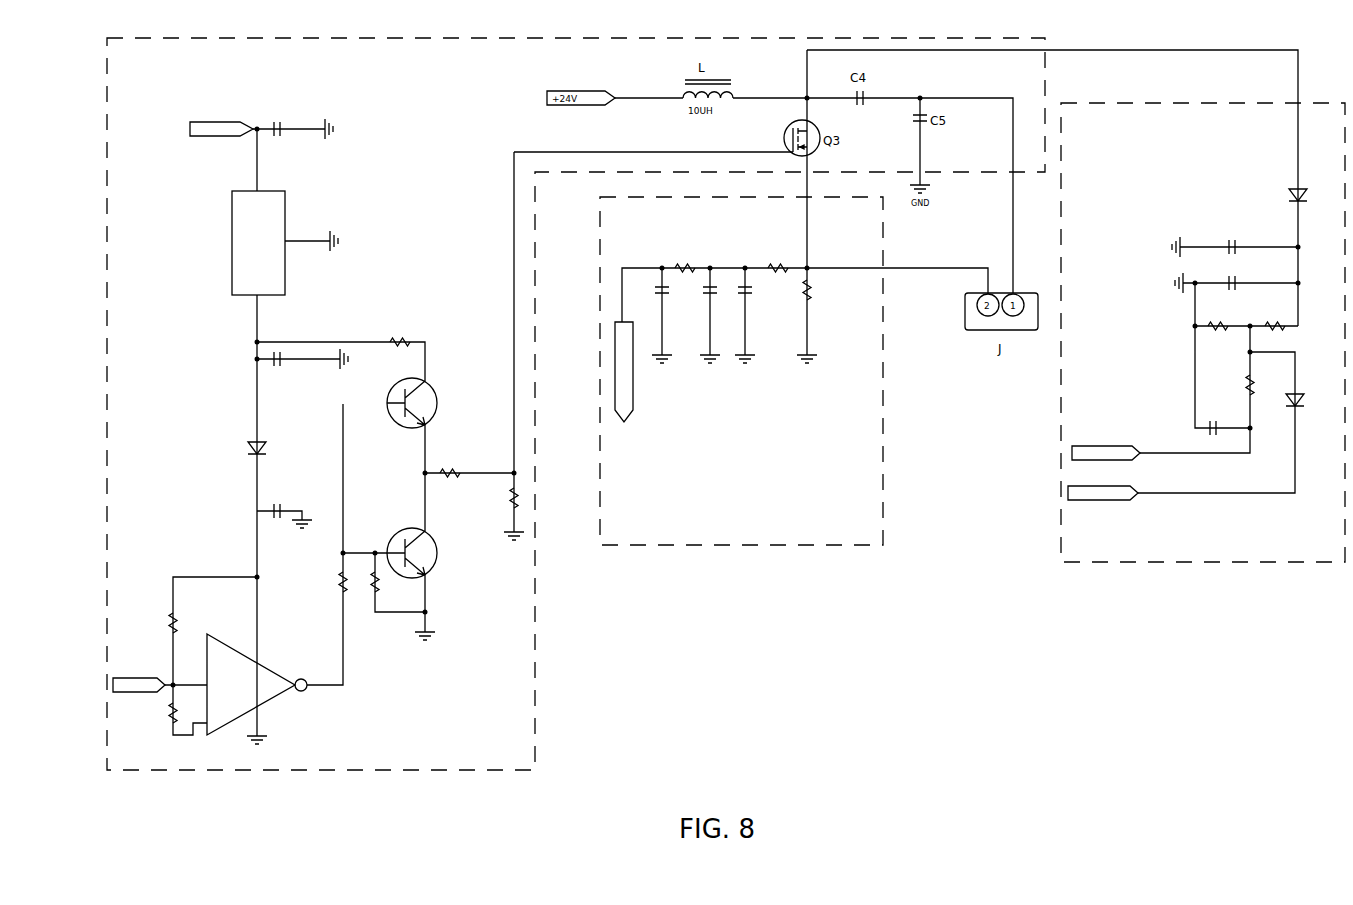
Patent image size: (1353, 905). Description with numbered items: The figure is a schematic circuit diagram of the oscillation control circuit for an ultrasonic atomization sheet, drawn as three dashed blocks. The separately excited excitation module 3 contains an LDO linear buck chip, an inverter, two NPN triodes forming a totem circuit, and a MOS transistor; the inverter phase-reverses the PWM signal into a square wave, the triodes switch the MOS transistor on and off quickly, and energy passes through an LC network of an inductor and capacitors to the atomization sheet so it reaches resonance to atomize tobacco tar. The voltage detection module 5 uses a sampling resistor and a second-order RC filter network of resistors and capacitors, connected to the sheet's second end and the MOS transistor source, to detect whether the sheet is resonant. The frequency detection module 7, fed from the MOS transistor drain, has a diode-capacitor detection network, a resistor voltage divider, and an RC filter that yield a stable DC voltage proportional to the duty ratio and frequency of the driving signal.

The separately excited excitation module 3 is at (576, 404).
The voltage detection module 5 is at (741, 371).
The frequency detection module 7 is at (1203, 332).